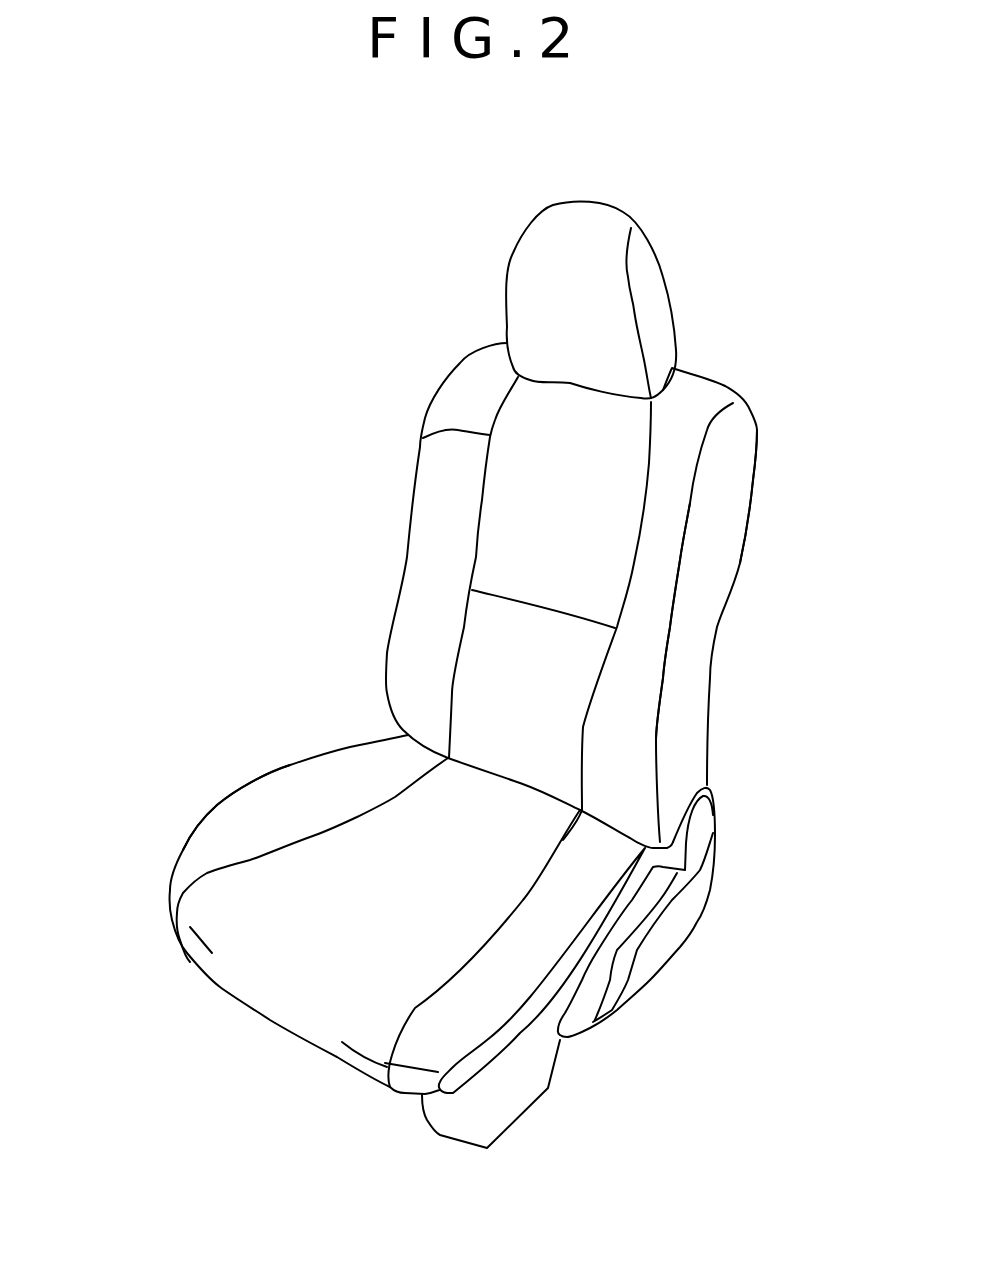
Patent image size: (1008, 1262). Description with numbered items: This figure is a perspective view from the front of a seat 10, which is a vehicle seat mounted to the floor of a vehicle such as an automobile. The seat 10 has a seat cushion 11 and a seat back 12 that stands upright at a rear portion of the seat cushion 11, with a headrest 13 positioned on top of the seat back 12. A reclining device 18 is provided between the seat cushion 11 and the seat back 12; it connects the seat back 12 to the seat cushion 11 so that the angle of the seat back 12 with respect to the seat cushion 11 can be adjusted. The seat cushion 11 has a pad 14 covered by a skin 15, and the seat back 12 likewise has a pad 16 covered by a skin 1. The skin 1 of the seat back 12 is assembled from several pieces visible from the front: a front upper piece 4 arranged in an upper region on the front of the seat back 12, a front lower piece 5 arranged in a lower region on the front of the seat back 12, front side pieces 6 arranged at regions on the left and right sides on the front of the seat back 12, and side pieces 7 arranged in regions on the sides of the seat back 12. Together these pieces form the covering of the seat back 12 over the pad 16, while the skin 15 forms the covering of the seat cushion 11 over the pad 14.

The skin 1 is at (757, 413).
The front upper piece 4 is at (435, 430).
The front lower piece 5 is at (470, 693).
The front side pieces 6 is at (435, 520).
The side pieces 7 is at (692, 632).
The seat 10 is at (398, 348).
The seat cushion 11 is at (330, 748).
The seat back 12 is at (458, 363).
The headrest 13 is at (497, 260).
The pad 14 is at (322, 860).
The skin 15 is at (198, 843).
The pad 16 is at (713, 472).
The reclining device 18 is at (677, 812).